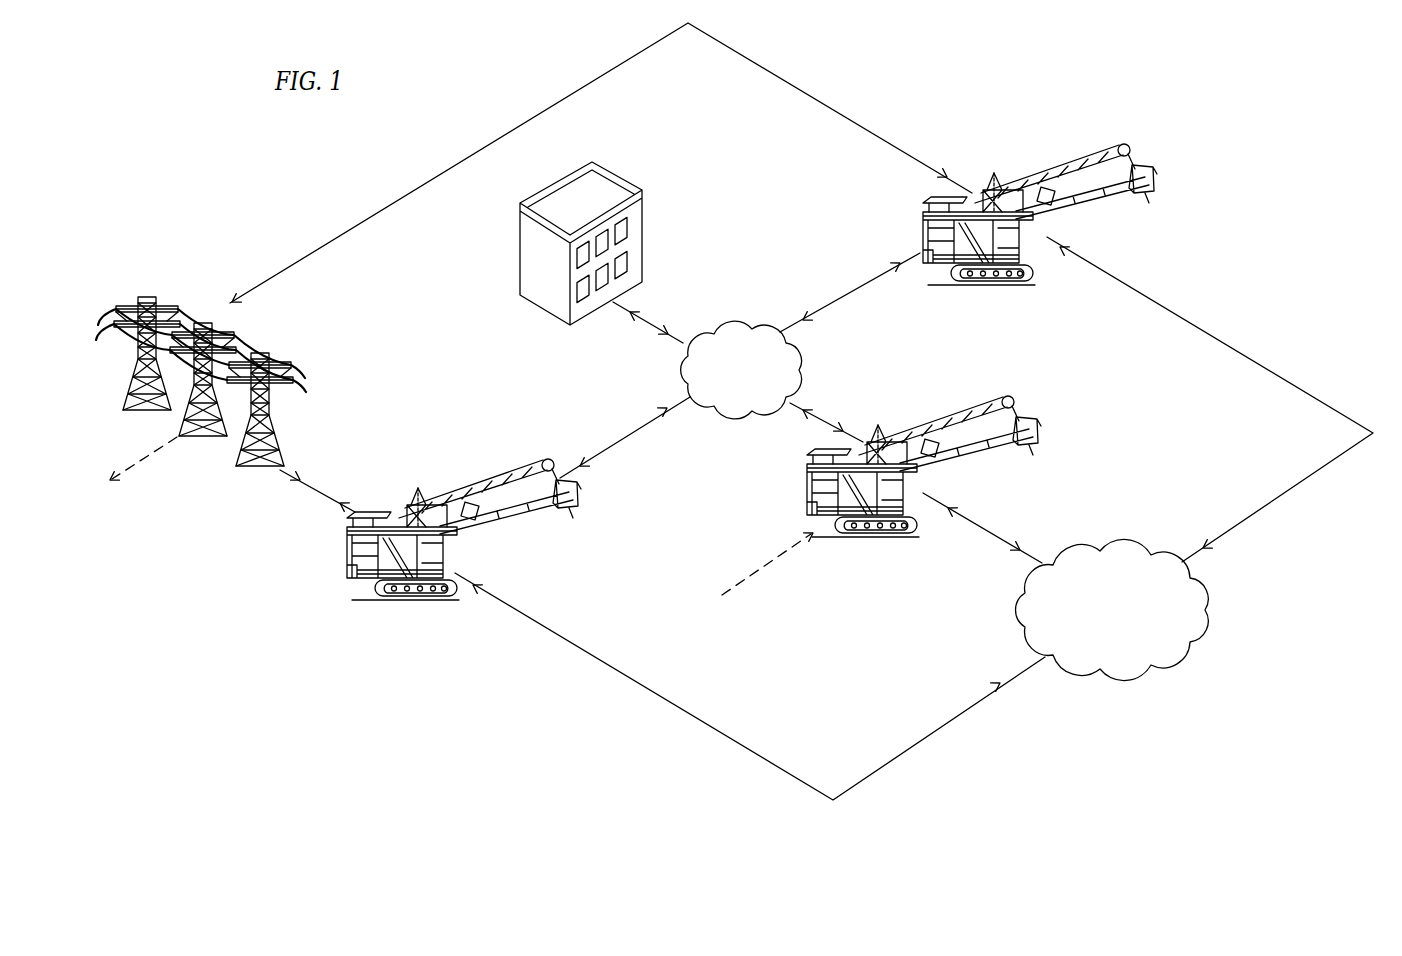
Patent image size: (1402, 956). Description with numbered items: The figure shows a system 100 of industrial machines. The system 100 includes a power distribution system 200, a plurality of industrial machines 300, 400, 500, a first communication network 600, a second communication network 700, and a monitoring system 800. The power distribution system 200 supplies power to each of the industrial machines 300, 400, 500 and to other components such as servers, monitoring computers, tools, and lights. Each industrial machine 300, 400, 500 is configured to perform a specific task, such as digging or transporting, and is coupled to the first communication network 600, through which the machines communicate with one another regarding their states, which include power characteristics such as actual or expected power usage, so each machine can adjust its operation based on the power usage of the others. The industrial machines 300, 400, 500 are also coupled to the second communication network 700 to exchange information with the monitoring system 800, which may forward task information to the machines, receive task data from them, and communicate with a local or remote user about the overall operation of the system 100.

The system 100 is at (930, 84).
The power distribution system 200 is at (227, 333).
The industrial machine 300 is at (467, 492).
The industrial machine 400 is at (880, 427).
The industrial machine 500 is at (1113, 145).
The first communication network 600 is at (1085, 545).
The second communication network 700 is at (802, 363).
The monitoring system 800 is at (642, 195).